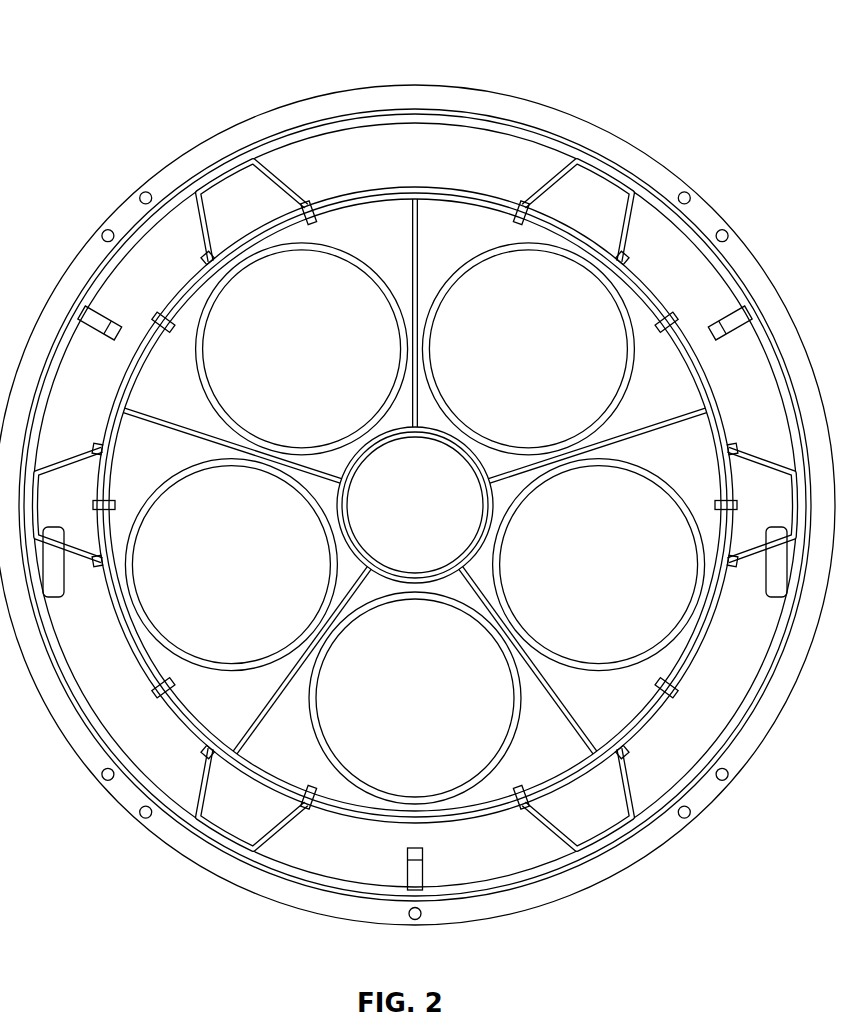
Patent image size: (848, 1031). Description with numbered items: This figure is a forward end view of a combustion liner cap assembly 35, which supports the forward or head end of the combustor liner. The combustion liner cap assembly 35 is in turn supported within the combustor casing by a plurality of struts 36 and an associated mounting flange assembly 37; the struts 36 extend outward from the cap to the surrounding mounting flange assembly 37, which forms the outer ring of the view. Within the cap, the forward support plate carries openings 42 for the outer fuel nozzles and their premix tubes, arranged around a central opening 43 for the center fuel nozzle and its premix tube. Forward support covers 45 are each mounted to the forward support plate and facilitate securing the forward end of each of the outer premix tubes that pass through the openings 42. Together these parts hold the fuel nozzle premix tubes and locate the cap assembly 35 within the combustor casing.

The combustion liner cap assembly 35 is at (417, 474).
The struts 36 is at (630, 235).
The mounting flange assembly 37 is at (633, 150).
The openings 42 is at (340, 268).
The openings 43 is at (400, 516).
The forward support covers 45 is at (458, 212).